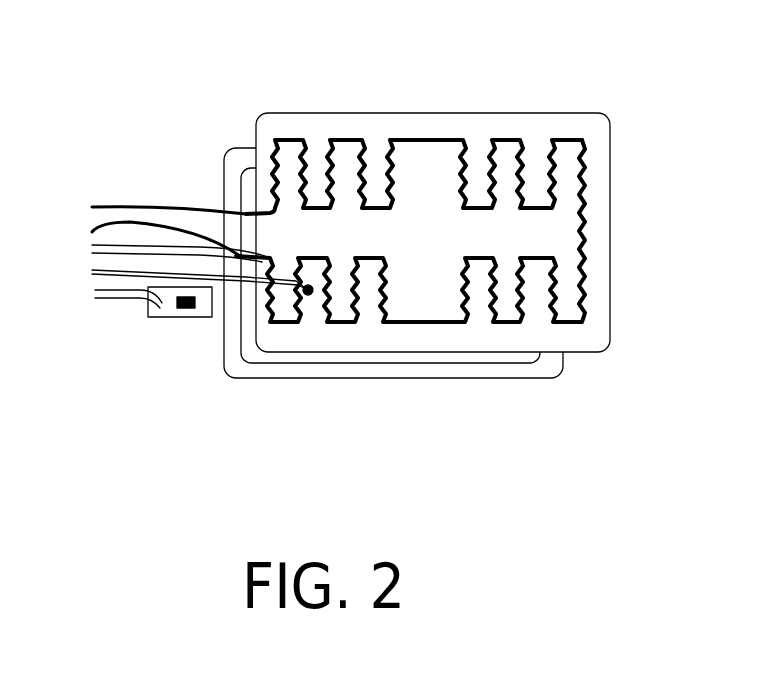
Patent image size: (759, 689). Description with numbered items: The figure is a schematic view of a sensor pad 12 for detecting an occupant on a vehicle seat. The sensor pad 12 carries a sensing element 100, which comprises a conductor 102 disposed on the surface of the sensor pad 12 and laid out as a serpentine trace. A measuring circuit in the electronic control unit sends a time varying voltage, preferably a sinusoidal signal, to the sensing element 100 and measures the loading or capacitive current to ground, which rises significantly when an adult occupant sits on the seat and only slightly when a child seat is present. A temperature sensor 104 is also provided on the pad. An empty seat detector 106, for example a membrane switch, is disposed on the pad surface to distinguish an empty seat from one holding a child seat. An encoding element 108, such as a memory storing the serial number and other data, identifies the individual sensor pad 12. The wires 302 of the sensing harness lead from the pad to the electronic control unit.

The sensor pad 12 is at (608, 100).
The sensing element 100 is at (390, 145).
The conductor 102 is at (583, 307).
The temperature sensor 104 is at (308, 290).
The empty seat detector 106 is at (252, 173).
The encoding element 108 is at (183, 303).
The wires 302 is at (153, 203).